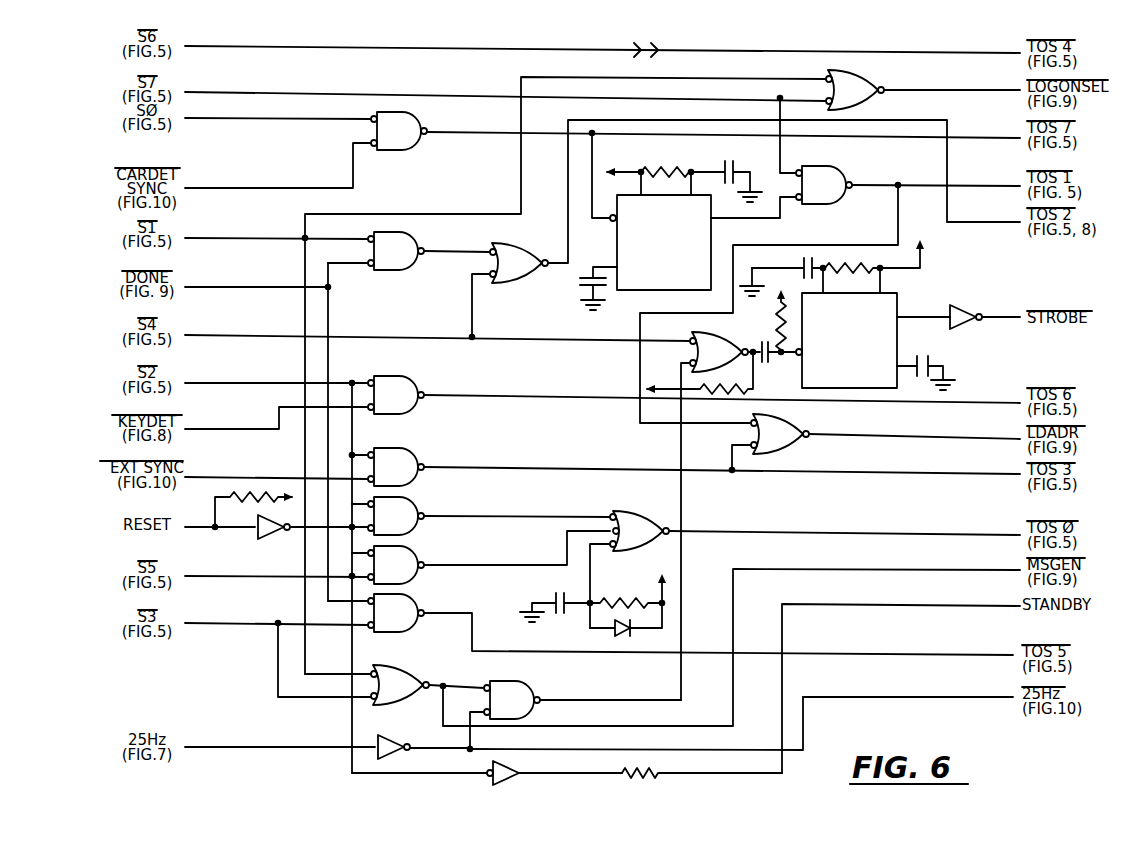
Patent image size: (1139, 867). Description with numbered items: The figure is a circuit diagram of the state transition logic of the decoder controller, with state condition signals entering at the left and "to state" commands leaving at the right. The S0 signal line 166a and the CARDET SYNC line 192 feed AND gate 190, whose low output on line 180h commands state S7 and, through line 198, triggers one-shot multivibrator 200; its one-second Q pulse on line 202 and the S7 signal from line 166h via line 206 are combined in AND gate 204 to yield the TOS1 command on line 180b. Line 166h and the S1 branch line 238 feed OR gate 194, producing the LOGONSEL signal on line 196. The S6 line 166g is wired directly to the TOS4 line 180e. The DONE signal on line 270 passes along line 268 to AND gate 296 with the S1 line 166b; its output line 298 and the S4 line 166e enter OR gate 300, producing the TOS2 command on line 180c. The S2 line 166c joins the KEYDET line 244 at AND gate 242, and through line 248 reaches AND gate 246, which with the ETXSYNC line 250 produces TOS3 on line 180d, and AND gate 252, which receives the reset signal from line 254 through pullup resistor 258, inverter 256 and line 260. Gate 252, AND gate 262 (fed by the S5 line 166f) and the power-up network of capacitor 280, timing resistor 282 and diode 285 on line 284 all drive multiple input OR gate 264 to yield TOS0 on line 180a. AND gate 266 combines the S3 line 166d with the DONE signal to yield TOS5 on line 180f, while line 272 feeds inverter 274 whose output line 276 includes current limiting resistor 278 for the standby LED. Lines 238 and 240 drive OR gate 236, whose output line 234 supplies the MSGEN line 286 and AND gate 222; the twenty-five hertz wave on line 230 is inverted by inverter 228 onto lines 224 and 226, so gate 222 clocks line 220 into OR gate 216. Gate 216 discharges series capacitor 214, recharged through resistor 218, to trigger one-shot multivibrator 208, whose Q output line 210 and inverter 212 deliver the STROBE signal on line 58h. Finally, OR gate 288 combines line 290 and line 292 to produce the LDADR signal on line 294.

The S6 signal line 166g is at (450, 48).
The TOS4 signal line 180e is at (793, 50).
The S7 signal line 166h is at (280, 92).
The S0 signal line 166a is at (289, 105).
The AND gate 190 is at (415, 118).
The CARDET SYNC line 192 is at (238, 188).
The TOS7 signal line 180h is at (963, 137).
The S1 signal branch line 238 is at (702, 76).
The OR gate 194 is at (875, 74).
The LOGONSEL output line 196 is at (942, 91).
The AND gate 204 is at (840, 166).
The TOS1 signal line 180b is at (972, 173).
The TOS2 signal line 180c is at (963, 221).
The S7 coupling line 206 is at (780, 146).
The one-shot multivibrator 200 is at (657, 291).
The trigger line 198 is at (594, 207).
The Q output line 202 is at (751, 223).
The TOS1 branch line 290 is at (839, 233).
The S1 signal line 166b is at (228, 238).
The AND gate 296 is at (403, 270).
The AND gate output line 298 is at (437, 245).
The OR gate 300 is at (520, 227).
The DONE signal line 270 is at (207, 287).
The DONE branch line 268 is at (332, 356).
The S4 signal line 166e is at (222, 335).
The S2 signal line 166c is at (220, 383).
The AND gate 242 is at (400, 377).
The KEYDET signal line 244 is at (205, 429).
The S2 branch line 248 is at (355, 434).
The AND gate 246 is at (410, 452).
The ETXSYNC signal line 250 is at (213, 477).
The pullup resistor 258 is at (228, 497).
The reset line 254 is at (194, 528).
The inverter 256 is at (258, 536).
The inverted reset line 260 is at (314, 530).
The AND gate 252 is at (410, 502).
The AND gate 262 is at (417, 555).
The S5 signal line 166f is at (210, 576).
The OR gate 264 is at (650, 509).
The AND gate 266 is at (413, 600).
The S3 signal line 166d is at (197, 623).
The TOS5 signal line 180f is at (868, 653).
The S3 branch line 240 is at (278, 670).
The OR gate 236 is at (400, 664).
The OR gate output line 234 is at (457, 686).
The AND gate 222 is at (532, 683).
The AND gate output line 220 is at (677, 446).
The inverter output line 224 is at (472, 738).
The inverter output line 226 is at (870, 696).
The inverter 228 is at (384, 734).
The 25 Hz input line 230 is at (231, 746).
The S5 branch line 272 is at (350, 763).
The inverter 274 is at (521, 768).
The current limiting resistor 278 is at (662, 760).
The inverter output line 276 is at (867, 606).
The MSGEN signal line 286 is at (855, 569).
The TOS0 signal line 180a is at (808, 533).
The capacitor 280 is at (550, 599).
The power-up input line 284 is at (589, 578).
The timing resistor 282 is at (633, 589).
The diode 285 is at (620, 633).
The OR gate 216 is at (702, 334).
The series capacitor 214 is at (767, 344).
The resistor 218 is at (786, 316).
The one-shot multivibrator 208 is at (898, 338).
The Q output line 210 is at (915, 316).
The inverter 212 is at (964, 329).
The strobe line 58h is at (1008, 316).
The OR gate 288 is at (803, 420).
The TOS3 branch line 292 is at (735, 450).
The LDADR output line 294 is at (878, 436).
The TOS3 signal line 180d is at (870, 472).